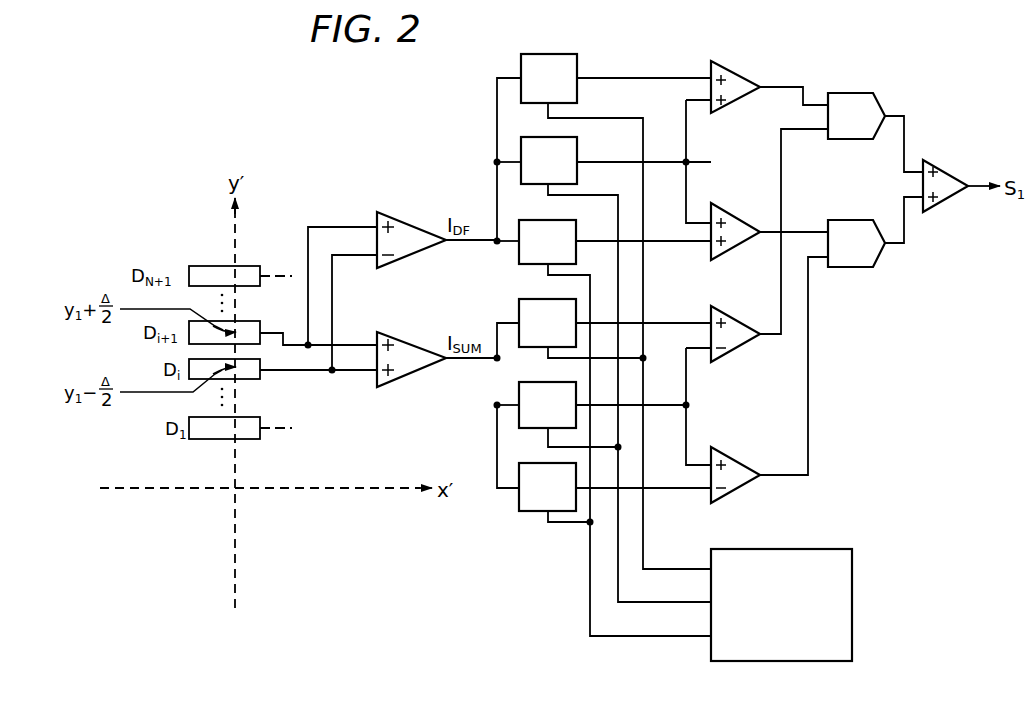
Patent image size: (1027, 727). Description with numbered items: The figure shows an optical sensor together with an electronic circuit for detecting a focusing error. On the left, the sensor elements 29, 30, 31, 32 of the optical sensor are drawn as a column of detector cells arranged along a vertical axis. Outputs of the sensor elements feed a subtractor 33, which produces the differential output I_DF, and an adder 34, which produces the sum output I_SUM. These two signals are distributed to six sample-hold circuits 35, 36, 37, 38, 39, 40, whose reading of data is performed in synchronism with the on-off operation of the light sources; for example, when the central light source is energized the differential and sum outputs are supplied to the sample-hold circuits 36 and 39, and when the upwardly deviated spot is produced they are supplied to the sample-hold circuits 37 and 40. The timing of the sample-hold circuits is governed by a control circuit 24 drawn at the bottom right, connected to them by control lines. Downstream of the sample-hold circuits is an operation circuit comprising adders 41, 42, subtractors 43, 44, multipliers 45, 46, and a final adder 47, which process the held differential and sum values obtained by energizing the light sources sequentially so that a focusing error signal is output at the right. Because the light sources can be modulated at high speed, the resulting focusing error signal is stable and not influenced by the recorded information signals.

The control circuit 24 is at (852, 645).
The sensor element 29 is at (243, 266).
The sensor element 30 is at (252, 321).
The sensor element 31 is at (254, 379).
The sensor element 32 is at (252, 439).
The subtractor 33 is at (428, 203).
The adder 34 is at (428, 323).
The sample-hold circuit 35 is at (577, 62).
The sample-hold circuit 36 is at (577, 146).
The sample-hold circuit 37 is at (576, 225).
The sample-hold circuit 38 is at (519, 302).
The sample-hold circuit 39 is at (536, 428).
The sample-hold circuit 40 is at (530, 511).
The adder 41 is at (744, 69).
The adder 42 is at (748, 203).
The subtractor 43 is at (744, 316).
The subtractor 44 is at (760, 448).
The multiplier 45 is at (868, 93).
The multiplier 46 is at (867, 220).
The adder 47 is at (952, 168).